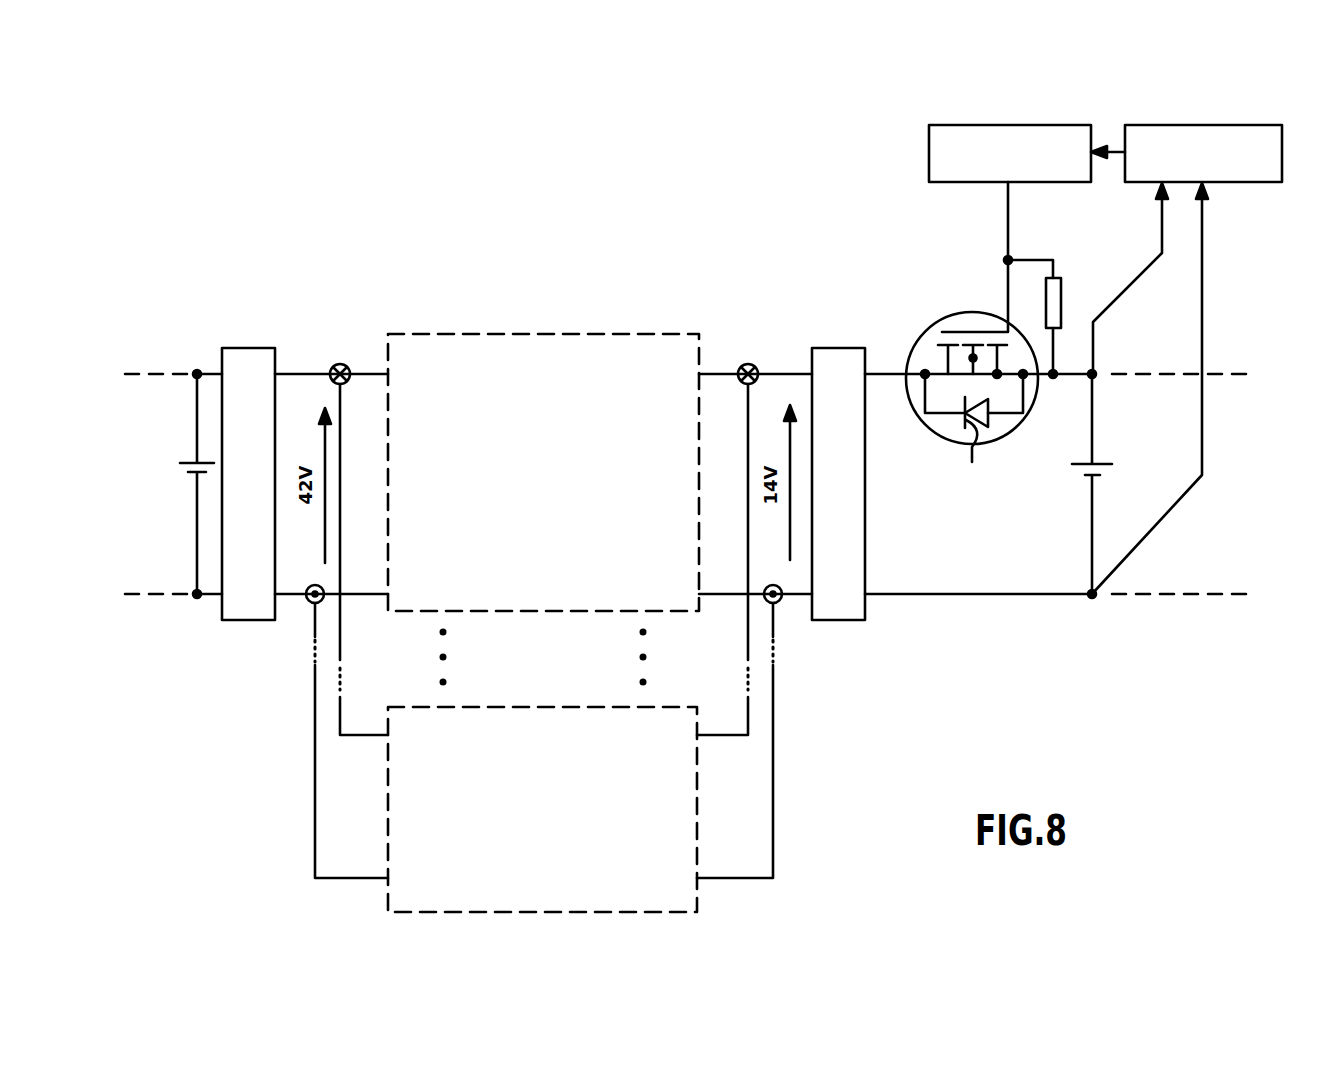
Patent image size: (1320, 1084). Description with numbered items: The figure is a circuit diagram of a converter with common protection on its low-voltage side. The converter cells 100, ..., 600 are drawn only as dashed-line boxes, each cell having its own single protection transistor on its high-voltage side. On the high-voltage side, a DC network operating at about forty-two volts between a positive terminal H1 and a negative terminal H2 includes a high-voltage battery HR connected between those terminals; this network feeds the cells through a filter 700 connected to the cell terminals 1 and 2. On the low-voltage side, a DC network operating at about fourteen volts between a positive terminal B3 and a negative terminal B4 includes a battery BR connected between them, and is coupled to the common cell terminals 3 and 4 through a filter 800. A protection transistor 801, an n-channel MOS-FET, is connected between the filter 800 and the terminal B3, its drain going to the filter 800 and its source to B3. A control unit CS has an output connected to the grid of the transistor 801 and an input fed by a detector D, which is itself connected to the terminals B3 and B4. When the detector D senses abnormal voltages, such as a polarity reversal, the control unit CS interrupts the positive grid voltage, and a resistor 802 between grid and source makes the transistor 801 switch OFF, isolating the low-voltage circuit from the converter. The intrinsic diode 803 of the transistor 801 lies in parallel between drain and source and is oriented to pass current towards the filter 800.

The terminal 1 is at (334, 366).
The terminal 2 is at (306, 604).
The terminal 3 is at (756, 365).
The terminal 4 is at (780, 604).
The cell 100 is at (575, 334).
The cell 600 is at (538, 912).
The filter 700 is at (242, 622).
The filter 800 is at (835, 622).
The protection transistor 801 is at (952, 310).
The resistor 802 is at (1063, 300).
The intrinsic diode 803 is at (979, 447).
The positive terminal H1 is at (197, 359).
The negative terminal H2 is at (195, 615).
The battery HR is at (183, 466).
The positive terminal B3 is at (1095, 368).
The negative terminal B4 is at (1090, 600).
The battery BR is at (1106, 470).
The control unit CS is at (1095, 125).
The detector D is at (1238, 125).